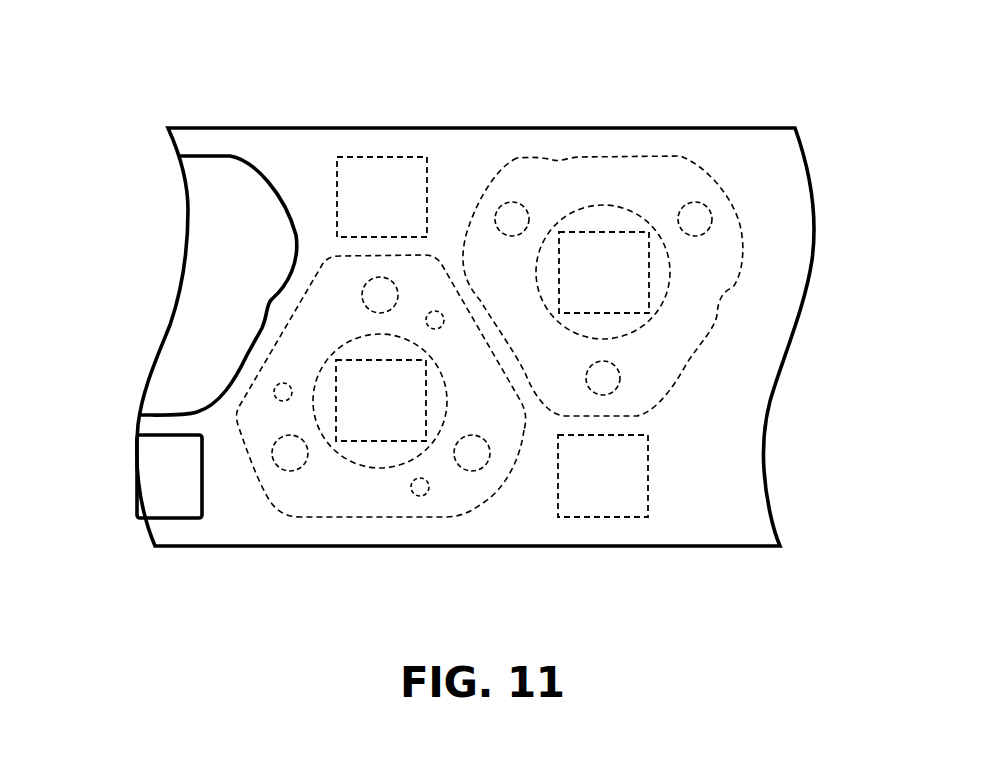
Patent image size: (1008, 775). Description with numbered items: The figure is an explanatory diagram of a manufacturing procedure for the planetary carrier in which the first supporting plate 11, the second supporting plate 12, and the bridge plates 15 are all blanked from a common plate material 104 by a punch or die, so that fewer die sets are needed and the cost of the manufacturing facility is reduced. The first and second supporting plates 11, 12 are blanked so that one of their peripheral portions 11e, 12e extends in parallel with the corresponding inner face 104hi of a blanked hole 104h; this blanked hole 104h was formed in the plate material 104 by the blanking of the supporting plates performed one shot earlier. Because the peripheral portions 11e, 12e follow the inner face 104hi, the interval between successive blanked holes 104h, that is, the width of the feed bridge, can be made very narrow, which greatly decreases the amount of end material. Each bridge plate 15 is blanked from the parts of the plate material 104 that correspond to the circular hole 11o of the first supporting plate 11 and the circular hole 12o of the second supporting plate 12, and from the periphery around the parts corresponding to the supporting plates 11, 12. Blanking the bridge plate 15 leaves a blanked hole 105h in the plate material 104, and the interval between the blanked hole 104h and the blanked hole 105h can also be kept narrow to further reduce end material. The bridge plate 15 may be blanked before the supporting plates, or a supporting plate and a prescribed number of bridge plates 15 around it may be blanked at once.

The plate material 104 is at (793, 178).
The blanked hole 104h is at (170, 244).
The inner face of blanked hole 104hi is at (265, 326).
The blanked hole 105h is at (161, 502).
The first supporting plate 11 is at (317, 426).
The peripheral portion 11e is at (288, 350).
The circular hole 11o is at (363, 452).
The second supporting plate 12 is at (671, 244).
The peripheral portion 12e is at (493, 307).
The circular hole 12o is at (657, 273).
The bridge plate 15 is at (377, 190).